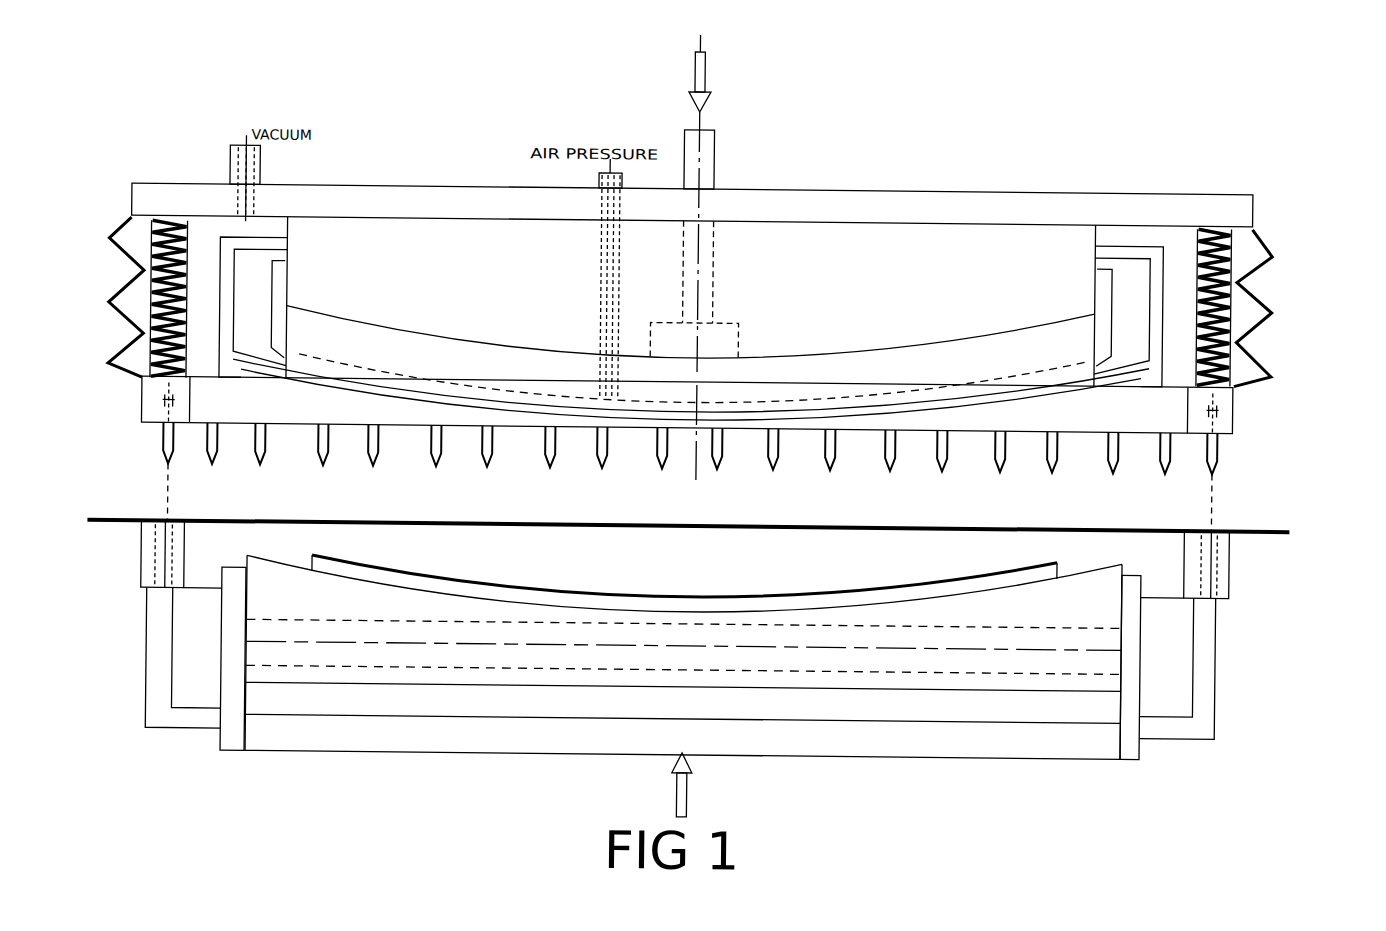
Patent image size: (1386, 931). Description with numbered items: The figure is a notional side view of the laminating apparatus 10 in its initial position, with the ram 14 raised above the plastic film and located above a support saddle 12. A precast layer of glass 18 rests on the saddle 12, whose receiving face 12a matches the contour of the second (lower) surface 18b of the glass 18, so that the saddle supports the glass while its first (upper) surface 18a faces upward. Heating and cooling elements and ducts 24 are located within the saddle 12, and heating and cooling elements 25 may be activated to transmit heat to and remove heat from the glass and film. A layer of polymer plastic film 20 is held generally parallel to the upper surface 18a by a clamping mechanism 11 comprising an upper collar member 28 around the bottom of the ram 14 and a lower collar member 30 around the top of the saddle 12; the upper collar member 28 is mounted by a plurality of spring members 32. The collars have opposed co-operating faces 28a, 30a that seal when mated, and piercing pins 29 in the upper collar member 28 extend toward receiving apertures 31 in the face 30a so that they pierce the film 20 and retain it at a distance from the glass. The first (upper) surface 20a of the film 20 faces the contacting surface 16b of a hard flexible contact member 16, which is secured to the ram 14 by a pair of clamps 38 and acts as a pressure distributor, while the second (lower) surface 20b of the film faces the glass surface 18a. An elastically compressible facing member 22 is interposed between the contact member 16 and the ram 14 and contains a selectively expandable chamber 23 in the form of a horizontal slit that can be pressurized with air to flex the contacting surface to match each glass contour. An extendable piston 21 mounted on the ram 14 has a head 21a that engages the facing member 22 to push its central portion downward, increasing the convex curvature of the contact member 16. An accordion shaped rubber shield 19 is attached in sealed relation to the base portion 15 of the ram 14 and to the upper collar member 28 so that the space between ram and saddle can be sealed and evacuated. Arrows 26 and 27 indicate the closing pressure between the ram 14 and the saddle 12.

The laminating apparatus 10 is at (1301, 100).
The clamping mechanism 11 is at (125, 410).
The support saddle 12 is at (235, 625).
The receiving face 12a is at (268, 566).
The ram 14 is at (905, 248).
The base portion 15 is at (782, 199).
The hard flexible contact member 16 is at (962, 400).
The contacting surface 16b is at (372, 397).
The precast layer of glass 18 is at (820, 599).
The first (upper) surface 18a is at (455, 580).
The second (lower) surface 18b is at (350, 589).
The accordion shaped rubber shield 19 is at (122, 264).
The polymer plastic film 20 is at (770, 522).
The first (upper) surface 20a is at (545, 522).
The second (lower) surface 20b is at (640, 532).
The extendable piston 21 is at (704, 260).
The head 21a is at (723, 338).
The elastically compressible facing member 22 is at (335, 336).
The selectively expandable chamber 23 is at (415, 378).
The heating and cooling elements and ducts 24 is at (910, 653).
The heating and cooling elements 25 is at (683, 645).
The arrow 26 is at (704, 68).
The arrow 27 is at (692, 803).
The upper collar member 28 is at (1238, 406).
The co-operating face 28a is at (1080, 432).
The piercing pins 29 is at (1225, 446).
The lower collar member 30 is at (1233, 594).
The co-operating face 30a is at (148, 533).
The receiving aperture 31 is at (1222, 552).
The spring members 32 is at (166, 224).
The clamps 38 is at (277, 250).